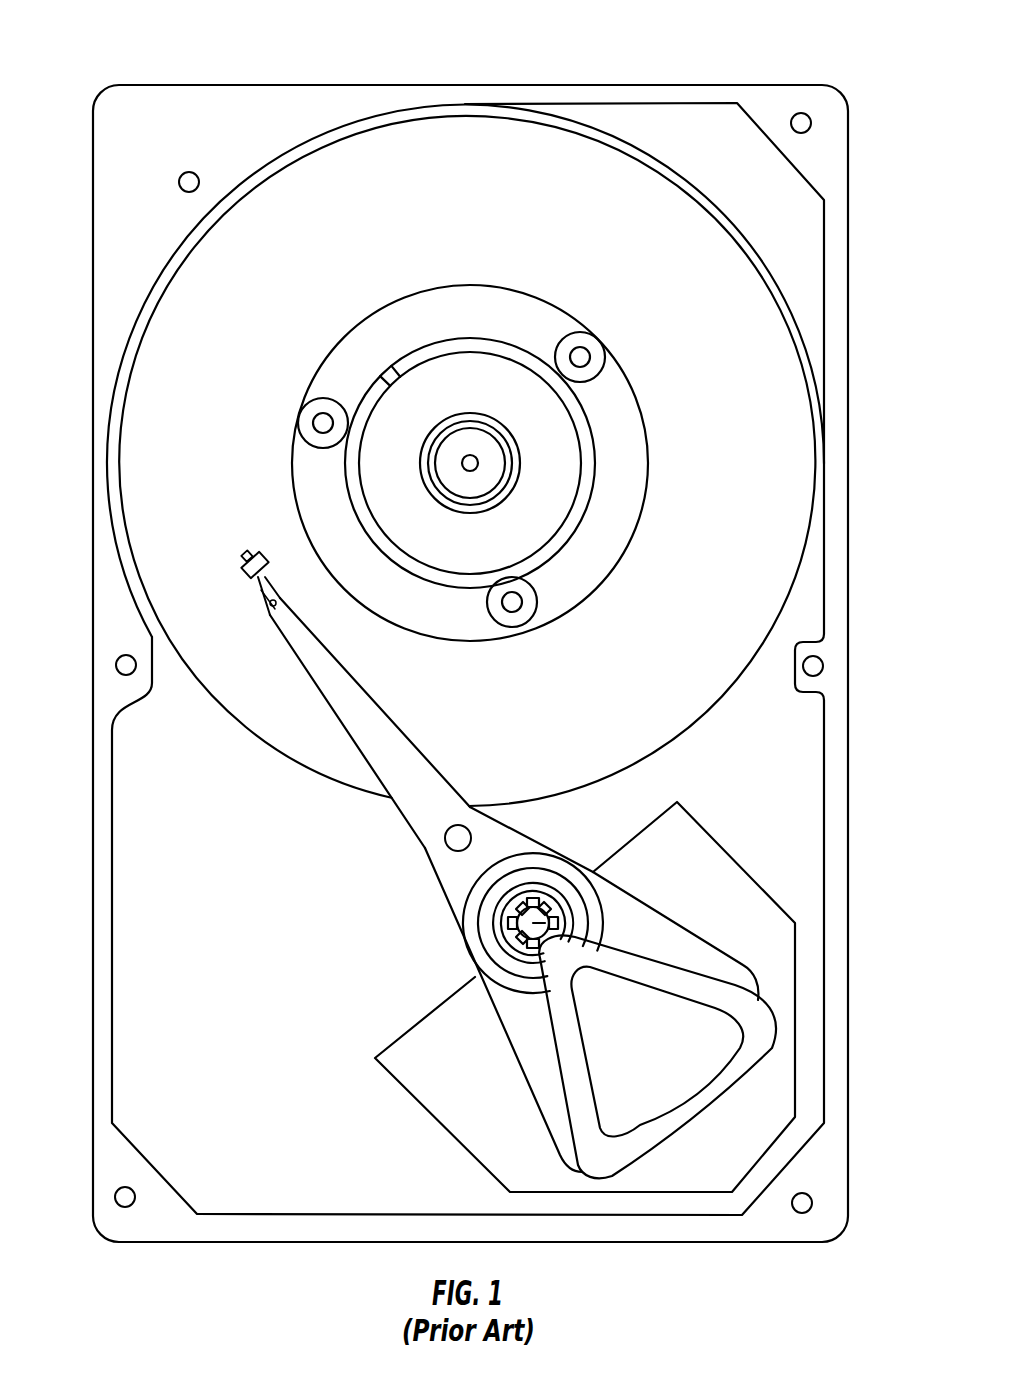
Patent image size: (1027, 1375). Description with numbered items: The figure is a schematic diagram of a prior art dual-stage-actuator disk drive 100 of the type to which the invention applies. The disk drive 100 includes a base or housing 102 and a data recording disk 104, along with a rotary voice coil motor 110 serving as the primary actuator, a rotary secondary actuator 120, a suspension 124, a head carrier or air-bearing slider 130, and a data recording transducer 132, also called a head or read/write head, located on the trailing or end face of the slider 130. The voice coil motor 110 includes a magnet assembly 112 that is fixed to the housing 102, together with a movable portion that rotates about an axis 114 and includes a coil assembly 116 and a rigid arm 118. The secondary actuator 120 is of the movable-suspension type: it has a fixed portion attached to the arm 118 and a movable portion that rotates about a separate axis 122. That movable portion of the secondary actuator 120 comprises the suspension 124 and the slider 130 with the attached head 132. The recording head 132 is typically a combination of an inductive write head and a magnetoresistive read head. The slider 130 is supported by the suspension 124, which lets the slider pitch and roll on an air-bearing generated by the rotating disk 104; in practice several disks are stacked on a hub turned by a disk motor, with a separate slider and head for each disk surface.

The disk drive 100 is at (130, 48).
The housing 102 is at (797, 793).
The data recording disk 104 is at (805, 428).
The rotary voice coil motor 110 is at (541, 1066).
The magnet assembly 112 is at (740, 905).
The axis 114 is at (533, 923).
The coil assembly 116 is at (580, 1087).
The rigid arm 118 is at (318, 672).
The rotary secondary actuator 120 is at (282, 589).
The axis 122 is at (270, 622).
The suspension 124 is at (262, 598).
The air-bearing slider 130 is at (240, 574).
The data recording transducer 132 is at (247, 552).